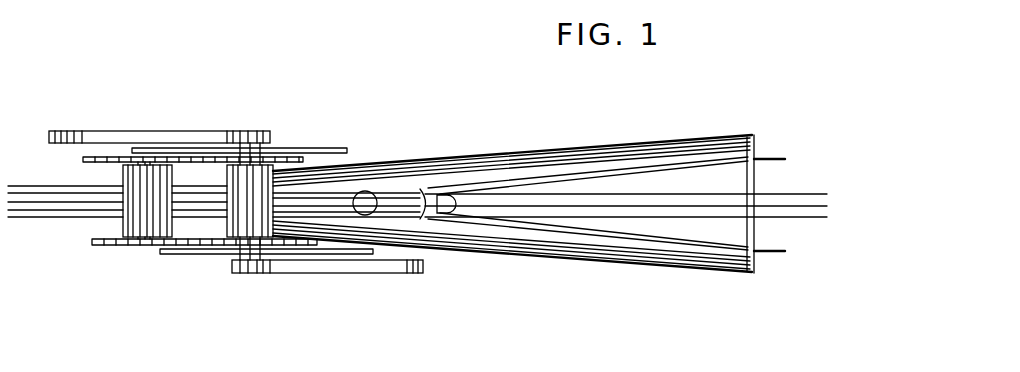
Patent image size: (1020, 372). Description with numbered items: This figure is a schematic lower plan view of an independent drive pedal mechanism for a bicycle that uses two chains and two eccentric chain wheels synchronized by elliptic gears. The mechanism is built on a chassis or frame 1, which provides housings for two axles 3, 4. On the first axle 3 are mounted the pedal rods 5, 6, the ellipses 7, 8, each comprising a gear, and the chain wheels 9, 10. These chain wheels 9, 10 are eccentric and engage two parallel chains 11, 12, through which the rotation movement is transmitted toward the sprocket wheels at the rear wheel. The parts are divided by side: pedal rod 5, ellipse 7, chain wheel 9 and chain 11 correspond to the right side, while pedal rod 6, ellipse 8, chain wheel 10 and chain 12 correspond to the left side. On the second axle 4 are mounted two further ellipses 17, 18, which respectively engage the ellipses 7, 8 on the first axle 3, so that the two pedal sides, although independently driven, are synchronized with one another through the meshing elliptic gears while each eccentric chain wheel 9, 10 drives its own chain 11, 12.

The chassis or frame 1 is at (62, 207).
The axle 3 is at (267, 133).
The axle 4 is at (137, 243).
The pedal rod 5 is at (175, 132).
The pedal rod 6 is at (385, 268).
The ellipse 7 is at (228, 145).
The ellipse 8 is at (280, 247).
The chain wheel 9 is at (343, 148).
The chain wheel 10 is at (332, 256).
The chain 11 is at (437, 152).
The chain 12 is at (447, 254).
The ellipse 17 is at (112, 156).
The ellipse 18 is at (150, 245).